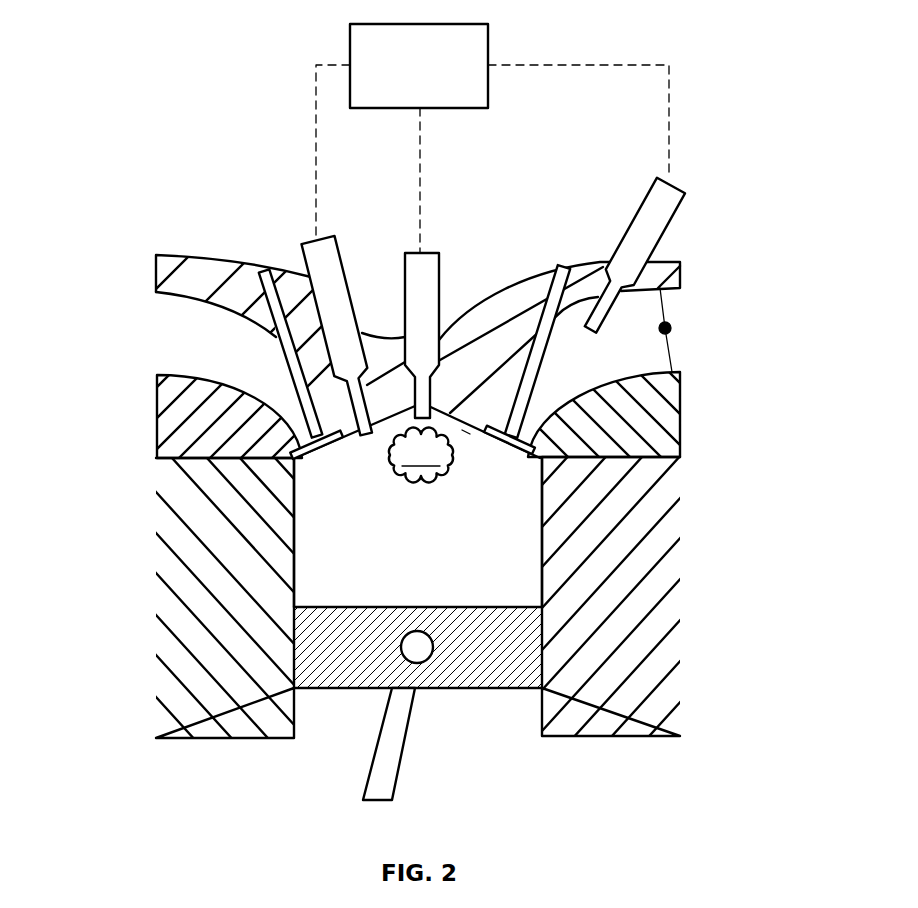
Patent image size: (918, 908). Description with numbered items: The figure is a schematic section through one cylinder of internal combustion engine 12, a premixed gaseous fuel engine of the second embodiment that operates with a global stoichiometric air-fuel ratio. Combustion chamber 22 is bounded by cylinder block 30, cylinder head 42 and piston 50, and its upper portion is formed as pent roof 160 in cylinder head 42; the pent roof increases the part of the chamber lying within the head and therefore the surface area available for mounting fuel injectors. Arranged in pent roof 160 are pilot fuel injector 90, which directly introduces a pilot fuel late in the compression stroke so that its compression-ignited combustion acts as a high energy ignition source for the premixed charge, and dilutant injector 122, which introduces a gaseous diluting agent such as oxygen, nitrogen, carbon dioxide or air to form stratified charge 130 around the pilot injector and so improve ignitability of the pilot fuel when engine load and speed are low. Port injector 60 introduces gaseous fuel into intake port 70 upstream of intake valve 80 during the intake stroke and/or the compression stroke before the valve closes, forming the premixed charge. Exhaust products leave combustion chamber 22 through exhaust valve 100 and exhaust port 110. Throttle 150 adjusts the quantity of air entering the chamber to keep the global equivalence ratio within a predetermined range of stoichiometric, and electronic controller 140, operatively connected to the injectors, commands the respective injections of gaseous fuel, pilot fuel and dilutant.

The internal combustion engine 12 is at (735, 114).
The combustion chamber 22 is at (407, 539).
The cylinder block 30 is at (217, 583).
The cylinder head 42 is at (643, 415).
The piston 50 is at (493, 678).
The port injector 60 is at (672, 221).
The intake port 70 is at (599, 364).
The intake valve 80 is at (550, 288).
The pilot fuel injector 90 is at (405, 272).
The exhaust valve 100 is at (258, 280).
The exhaust port 110 is at (199, 346).
The dilutant injector 122 is at (300, 252).
The stratified charge 130 is at (402, 466).
The electronic controller 140 is at (400, 78).
The throttle 150 is at (672, 357).
The pent roof 160 is at (467, 432).